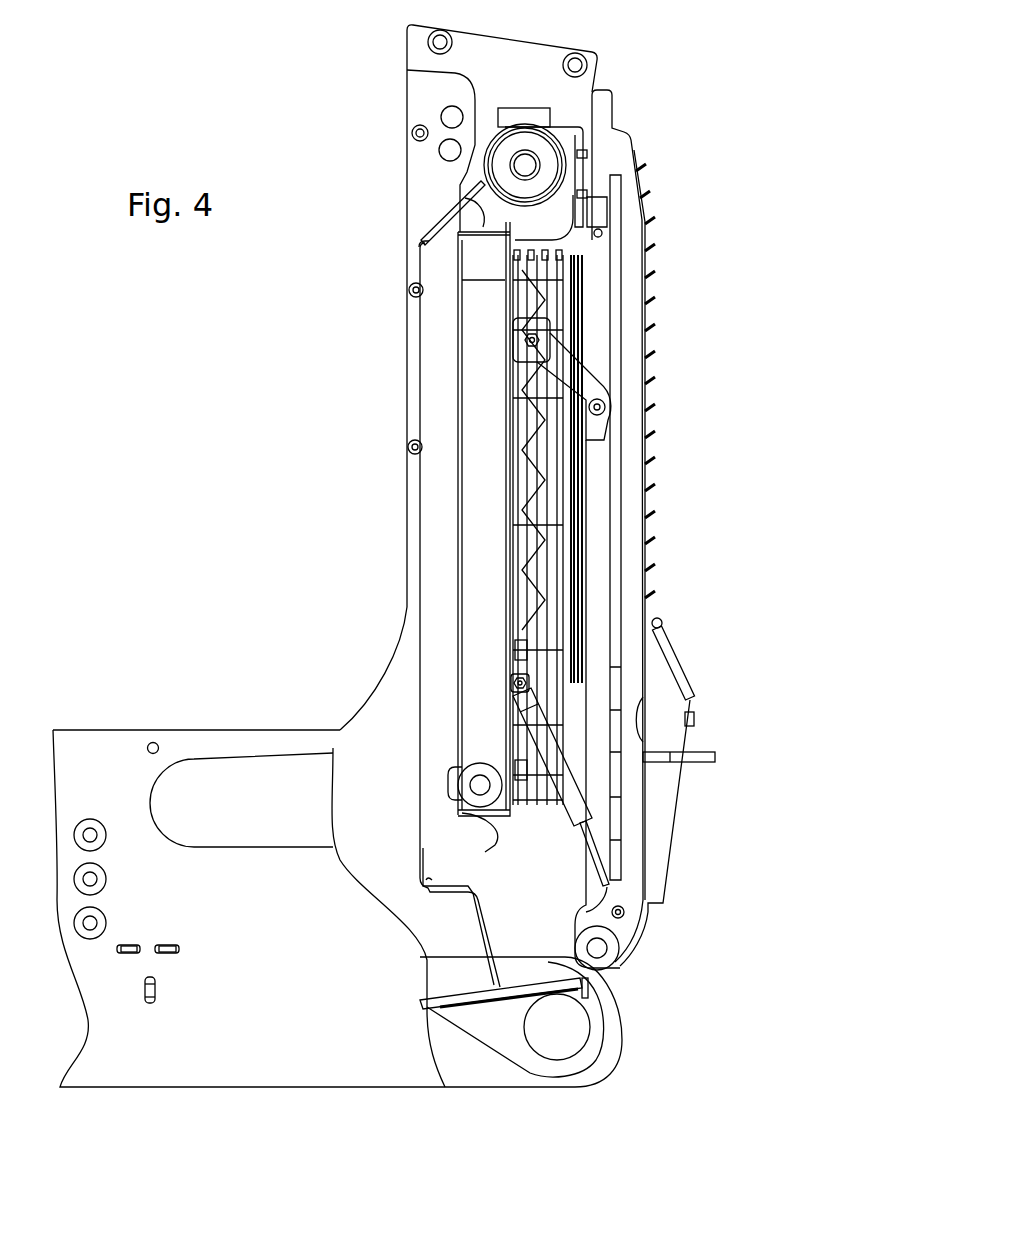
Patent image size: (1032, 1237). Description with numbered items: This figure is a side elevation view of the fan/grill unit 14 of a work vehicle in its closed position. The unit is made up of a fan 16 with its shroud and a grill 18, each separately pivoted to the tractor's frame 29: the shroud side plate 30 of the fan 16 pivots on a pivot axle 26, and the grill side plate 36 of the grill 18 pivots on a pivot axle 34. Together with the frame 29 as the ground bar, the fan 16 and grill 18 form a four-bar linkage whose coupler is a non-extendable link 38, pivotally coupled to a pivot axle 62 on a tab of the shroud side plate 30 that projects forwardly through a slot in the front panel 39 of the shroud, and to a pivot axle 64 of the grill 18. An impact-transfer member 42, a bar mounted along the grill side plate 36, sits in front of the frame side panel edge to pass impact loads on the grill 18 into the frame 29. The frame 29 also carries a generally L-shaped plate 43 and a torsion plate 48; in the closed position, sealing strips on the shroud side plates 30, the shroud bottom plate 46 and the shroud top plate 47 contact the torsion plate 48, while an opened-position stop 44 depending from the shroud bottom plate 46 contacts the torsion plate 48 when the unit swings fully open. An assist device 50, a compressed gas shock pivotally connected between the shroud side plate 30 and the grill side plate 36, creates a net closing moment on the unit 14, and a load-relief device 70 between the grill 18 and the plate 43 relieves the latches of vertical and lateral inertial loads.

The fan/grill unit 14 is at (706, 495).
The fan 16 is at (585, 463).
The grill 18 is at (670, 214).
The pivot axle 26 is at (480, 785).
The frame 29 is at (432, 222).
The side plate 30 is at (472, 572).
The pivot axle 34 is at (597, 948).
The side plate 36 is at (630, 318).
The link 38 is at (600, 367).
The front panel 39 is at (545, 483).
The impact-transfer member 42 is at (618, 247).
The L-shaped plate 43 is at (563, 128).
The opened-position stop 44 is at (420, 890).
The shroud bottom plate 46 is at (483, 843).
The shroud top plate 47 is at (472, 207).
The torsion plate 48 is at (425, 380).
The assist device 50 is at (573, 807).
The pivot axle 62 is at (532, 340).
The pivot axle 64 is at (598, 408).
The load-relief device 70 is at (600, 205).